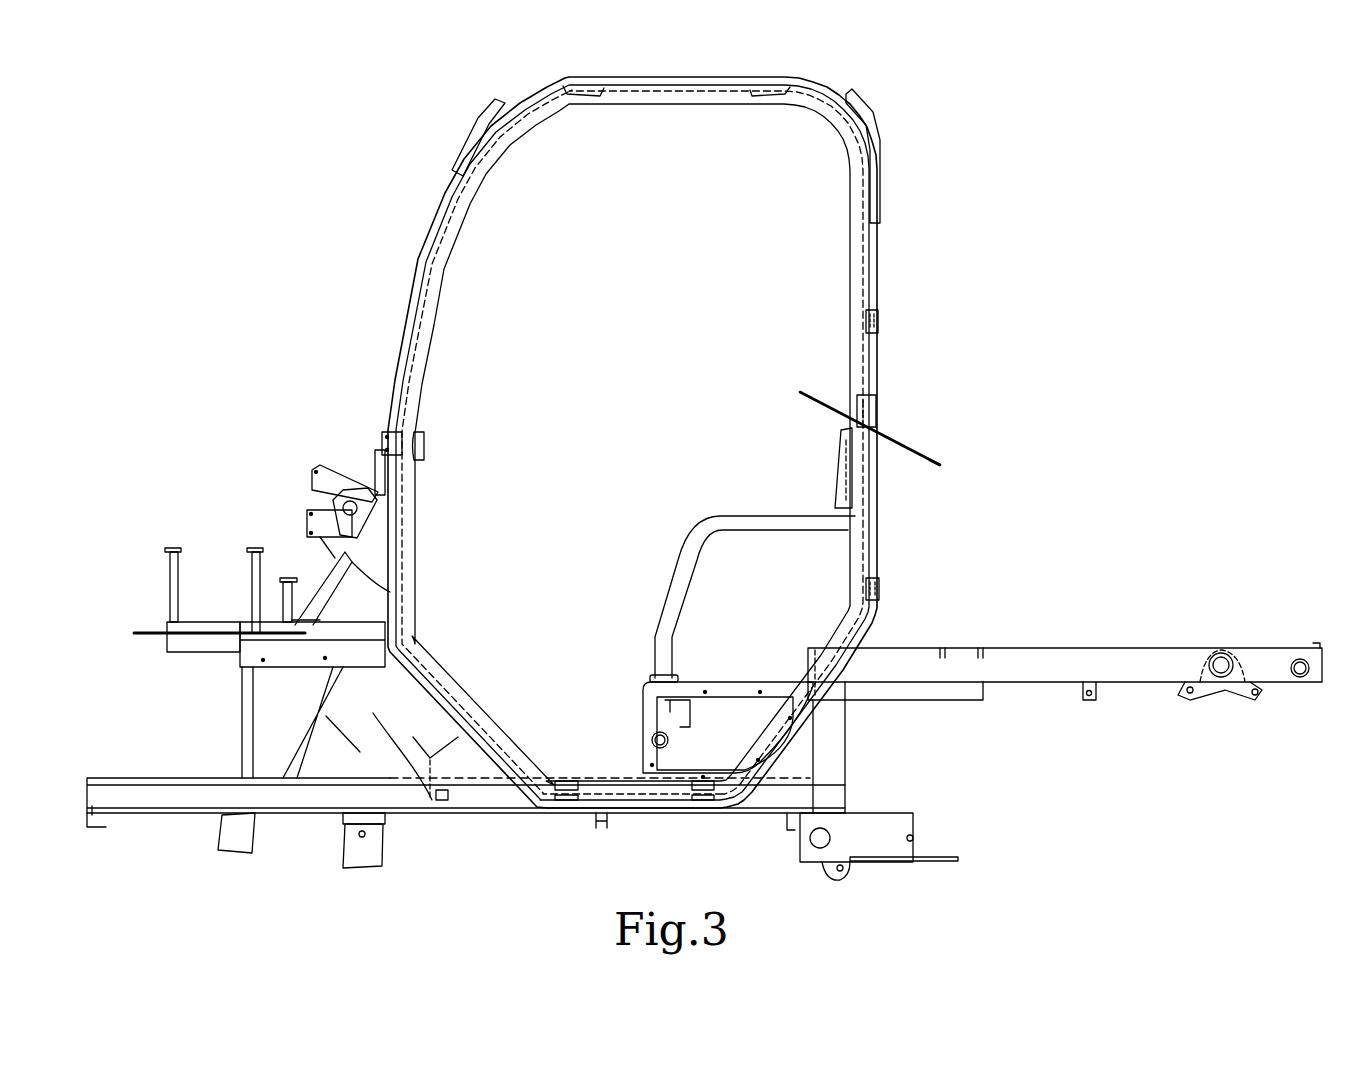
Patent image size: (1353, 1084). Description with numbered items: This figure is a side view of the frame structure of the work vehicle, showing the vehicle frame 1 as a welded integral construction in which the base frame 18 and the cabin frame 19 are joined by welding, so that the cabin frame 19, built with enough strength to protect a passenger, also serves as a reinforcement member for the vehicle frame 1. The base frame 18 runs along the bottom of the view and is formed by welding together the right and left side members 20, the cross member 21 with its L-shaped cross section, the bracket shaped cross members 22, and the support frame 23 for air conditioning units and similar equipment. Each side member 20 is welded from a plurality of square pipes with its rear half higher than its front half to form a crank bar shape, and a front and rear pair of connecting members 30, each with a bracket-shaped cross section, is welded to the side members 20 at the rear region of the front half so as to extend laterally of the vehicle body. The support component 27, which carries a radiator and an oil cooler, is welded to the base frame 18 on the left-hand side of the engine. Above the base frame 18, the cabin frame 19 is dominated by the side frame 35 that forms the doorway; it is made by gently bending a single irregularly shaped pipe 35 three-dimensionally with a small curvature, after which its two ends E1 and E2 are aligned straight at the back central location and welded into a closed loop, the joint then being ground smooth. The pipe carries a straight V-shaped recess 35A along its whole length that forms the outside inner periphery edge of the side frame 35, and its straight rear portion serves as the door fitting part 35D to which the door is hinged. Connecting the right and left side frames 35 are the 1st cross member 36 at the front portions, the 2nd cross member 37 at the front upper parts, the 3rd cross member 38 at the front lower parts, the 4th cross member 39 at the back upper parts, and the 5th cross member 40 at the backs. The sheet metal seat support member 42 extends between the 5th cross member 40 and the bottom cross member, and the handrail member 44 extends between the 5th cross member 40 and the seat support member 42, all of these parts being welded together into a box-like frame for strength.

The vehicle frame 1 is at (1040, 190).
The base frame 18 is at (462, 820).
The cabin frame 19 is at (413, 276).
The side member 20 is at (1115, 648).
The cross member 21 is at (100, 828).
The bracket shaped cross member 22 is at (230, 830).
The support frame 23 is at (207, 625).
The support component 27 is at (935, 856).
The connecting member 30 is at (545, 800).
The side frame 35 is at (692, 108).
The V-shaped recess 35A is at (583, 98).
The door fitting part 35D is at (878, 356).
The 1st cross member 36 is at (378, 462).
The 2nd cross member 37 is at (465, 142).
The 3rd cross member 38 is at (418, 718).
The 4th cross member 39 is at (868, 128).
The 5th cross member 40 is at (878, 412).
The seat support member 42 is at (722, 680).
The handrail member 44 is at (709, 517).
The end of pipe E1 is at (851, 419).
The end of pipe E2 is at (960, 465).